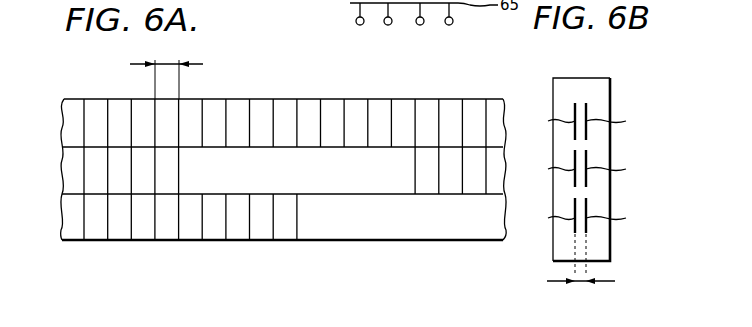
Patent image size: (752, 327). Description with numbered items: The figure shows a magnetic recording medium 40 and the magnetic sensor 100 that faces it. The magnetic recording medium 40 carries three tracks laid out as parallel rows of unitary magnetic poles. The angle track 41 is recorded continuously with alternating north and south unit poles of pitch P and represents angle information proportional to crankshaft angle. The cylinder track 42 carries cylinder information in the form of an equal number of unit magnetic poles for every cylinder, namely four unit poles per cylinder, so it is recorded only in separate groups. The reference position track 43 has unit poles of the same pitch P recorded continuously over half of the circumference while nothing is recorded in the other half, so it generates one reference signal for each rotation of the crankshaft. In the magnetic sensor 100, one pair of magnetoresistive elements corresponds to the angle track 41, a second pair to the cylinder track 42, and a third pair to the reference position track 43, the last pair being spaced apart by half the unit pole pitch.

In FIG. 6A, the magnetic recording medium 40 is at (386, 243).
In FIG. 6A, the angle track 41 is at (61, 121).
In FIG. 6A, the cylinder track 42 is at (61, 168).
In FIG. 6A, the reference position track 43 is at (61, 214).
In FIG. 6B, the magnetic sensor 100 is at (578, 78).